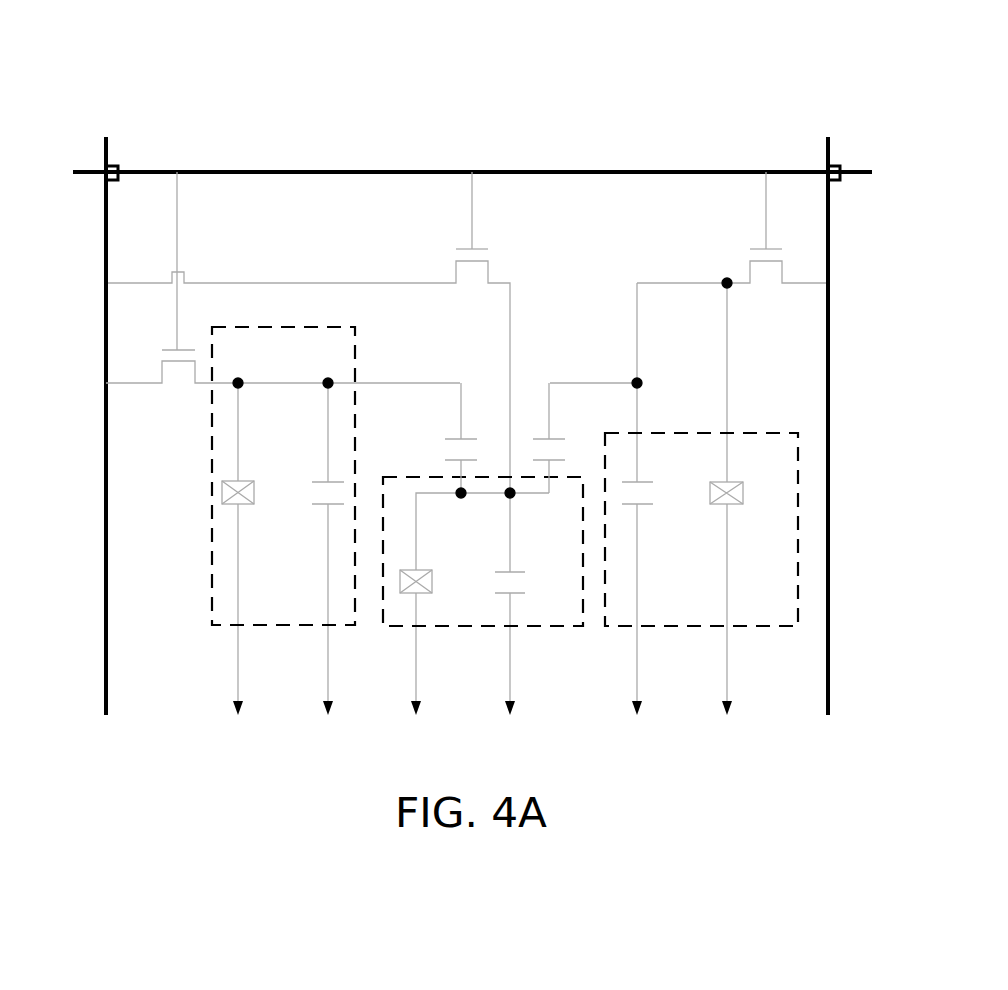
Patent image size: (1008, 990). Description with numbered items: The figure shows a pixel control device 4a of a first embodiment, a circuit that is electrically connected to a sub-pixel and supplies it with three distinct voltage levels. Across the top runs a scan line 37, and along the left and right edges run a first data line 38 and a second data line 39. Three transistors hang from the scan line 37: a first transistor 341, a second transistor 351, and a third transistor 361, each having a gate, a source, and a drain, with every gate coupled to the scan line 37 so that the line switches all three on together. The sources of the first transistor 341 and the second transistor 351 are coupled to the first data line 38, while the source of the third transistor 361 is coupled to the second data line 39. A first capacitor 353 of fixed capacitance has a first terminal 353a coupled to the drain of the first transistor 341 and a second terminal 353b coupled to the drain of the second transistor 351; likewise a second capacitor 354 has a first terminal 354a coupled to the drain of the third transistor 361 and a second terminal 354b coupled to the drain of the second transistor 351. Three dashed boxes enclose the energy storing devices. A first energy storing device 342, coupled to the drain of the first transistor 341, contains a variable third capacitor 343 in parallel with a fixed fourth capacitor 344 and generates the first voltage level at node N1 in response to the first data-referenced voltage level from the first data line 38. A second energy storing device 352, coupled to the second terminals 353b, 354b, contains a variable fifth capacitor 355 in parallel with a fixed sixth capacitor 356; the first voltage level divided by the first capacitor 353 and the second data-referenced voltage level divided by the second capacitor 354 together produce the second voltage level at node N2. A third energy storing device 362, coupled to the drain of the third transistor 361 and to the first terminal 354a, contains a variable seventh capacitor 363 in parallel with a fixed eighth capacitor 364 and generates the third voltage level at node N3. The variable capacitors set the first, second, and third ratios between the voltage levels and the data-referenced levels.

The pixel control device 4a is at (471, 78).
The scan line 37 is at (330, 170).
The first data line 38 is at (104, 505).
The second data line 39 is at (830, 373).
The first transistor 341 is at (168, 346).
The first energy storing device 342 is at (302, 325).
The third capacitor 343 is at (249, 508).
The fourth capacitor 344 is at (318, 478).
The second transistor 351 is at (461, 247).
The second energy storing device 352 is at (485, 630).
The first capacitor 353 is at (452, 432).
The first terminal of the first capacitor 353a is at (461, 428).
The second terminal of the first capacitor 353b is at (459, 472).
The second capacitor 354 is at (561, 432).
The first terminal of the second capacitor 354a is at (547, 428).
The second terminal of the second capacitor 354b is at (549, 466).
The fifth capacitor 355 is at (425, 565).
The sixth capacitor 356 is at (528, 581).
The third transistor 361 is at (753, 247).
The third energy storing device 362 is at (712, 430).
The seventh capacitor 363 is at (737, 512).
The eighth capacitor 364 is at (649, 512).
The node N1 is at (328, 377).
The node N2 is at (462, 499).
The node N3 is at (727, 289).